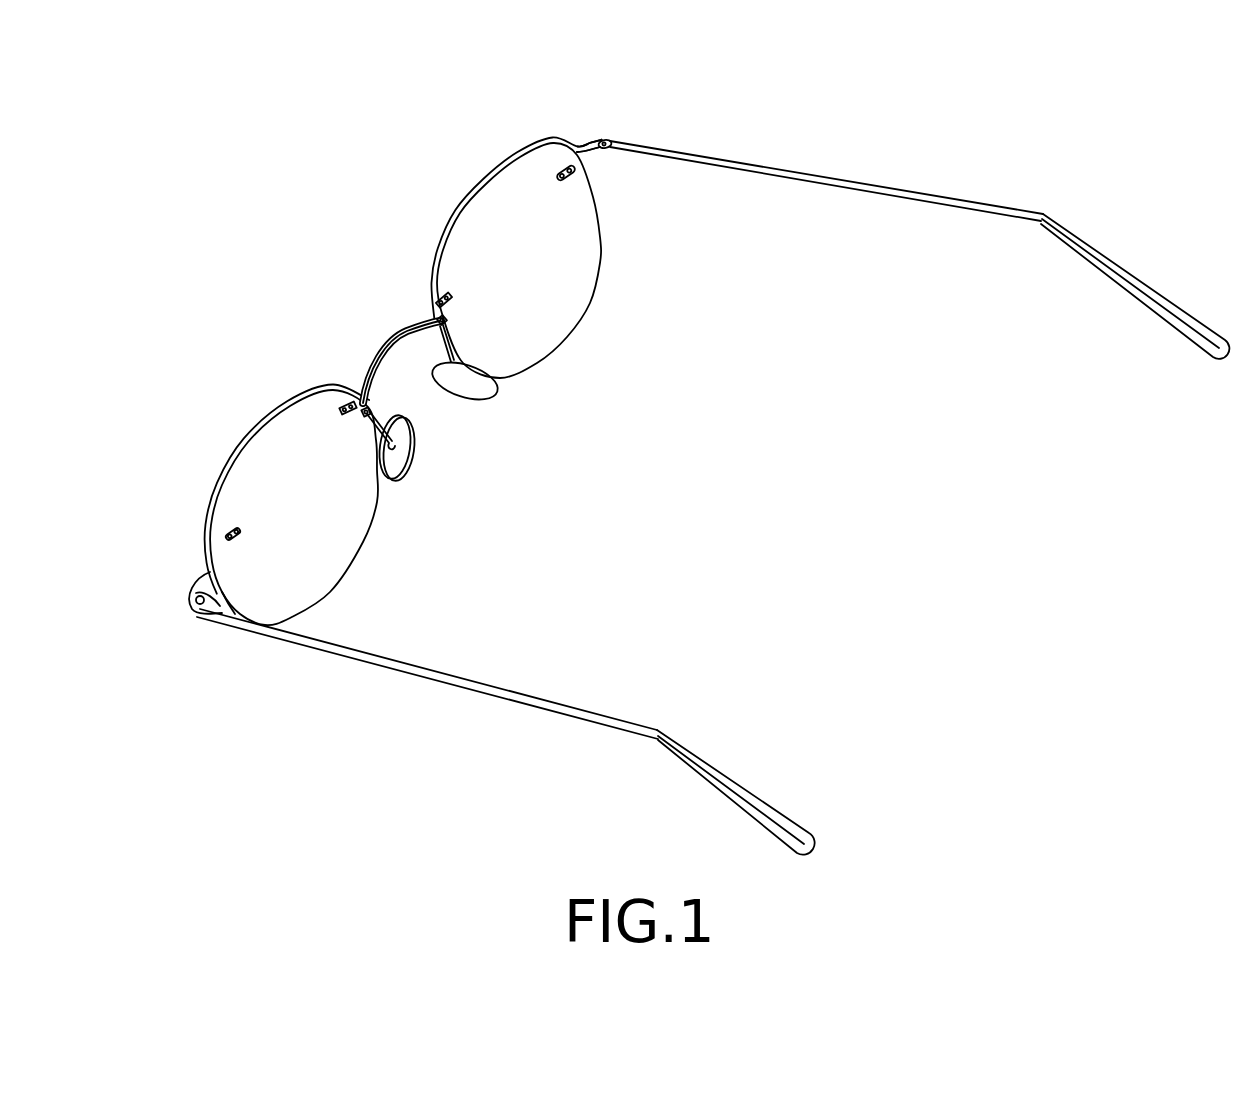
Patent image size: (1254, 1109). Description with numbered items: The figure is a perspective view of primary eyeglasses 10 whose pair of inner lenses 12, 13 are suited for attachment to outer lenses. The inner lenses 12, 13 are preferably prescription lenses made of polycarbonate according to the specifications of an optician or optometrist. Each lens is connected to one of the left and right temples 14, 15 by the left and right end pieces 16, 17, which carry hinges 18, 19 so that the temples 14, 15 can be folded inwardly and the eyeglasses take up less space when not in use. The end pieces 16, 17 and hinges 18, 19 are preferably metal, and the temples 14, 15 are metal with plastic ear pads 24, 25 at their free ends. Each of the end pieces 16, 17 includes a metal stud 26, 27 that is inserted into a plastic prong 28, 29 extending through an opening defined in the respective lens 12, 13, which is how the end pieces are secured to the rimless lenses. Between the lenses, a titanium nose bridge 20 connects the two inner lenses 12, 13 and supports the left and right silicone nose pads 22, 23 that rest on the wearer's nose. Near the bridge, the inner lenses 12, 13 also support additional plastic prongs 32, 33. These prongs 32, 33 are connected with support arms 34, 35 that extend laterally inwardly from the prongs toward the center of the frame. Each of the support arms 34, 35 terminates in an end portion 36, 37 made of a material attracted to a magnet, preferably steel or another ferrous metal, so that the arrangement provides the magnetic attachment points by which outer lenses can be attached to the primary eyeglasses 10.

The eyeglasses 10 is at (663, 457).
The inner lens 12 is at (262, 463).
The inner lens 13 is at (502, 195).
The left temple 14 is at (450, 680).
The right temple 15 is at (797, 168).
The left end piece 16 is at (193, 575).
The right end piece 17 is at (590, 145).
The hinge 18 is at (192, 610).
The hinge 19 is at (610, 142).
The nose bridge 20 is at (378, 350).
The left nose pad 22 is at (402, 460).
The right nose pad 23 is at (483, 395).
The ear pad 24 is at (795, 842).
The ear pad 25 is at (1167, 313).
The metal stud 26 is at (237, 533).
The metal stud 27 is at (563, 172).
The plastic prong 28 is at (233, 547).
The plastic prong 29 is at (573, 173).
The plastic prong 32 is at (346, 406).
The plastic prong 33 is at (440, 300).
The support arm 34 is at (357, 400).
The support arm 35 is at (437, 305).
The end portion 36 is at (373, 450).
The end portion 37 is at (432, 322).